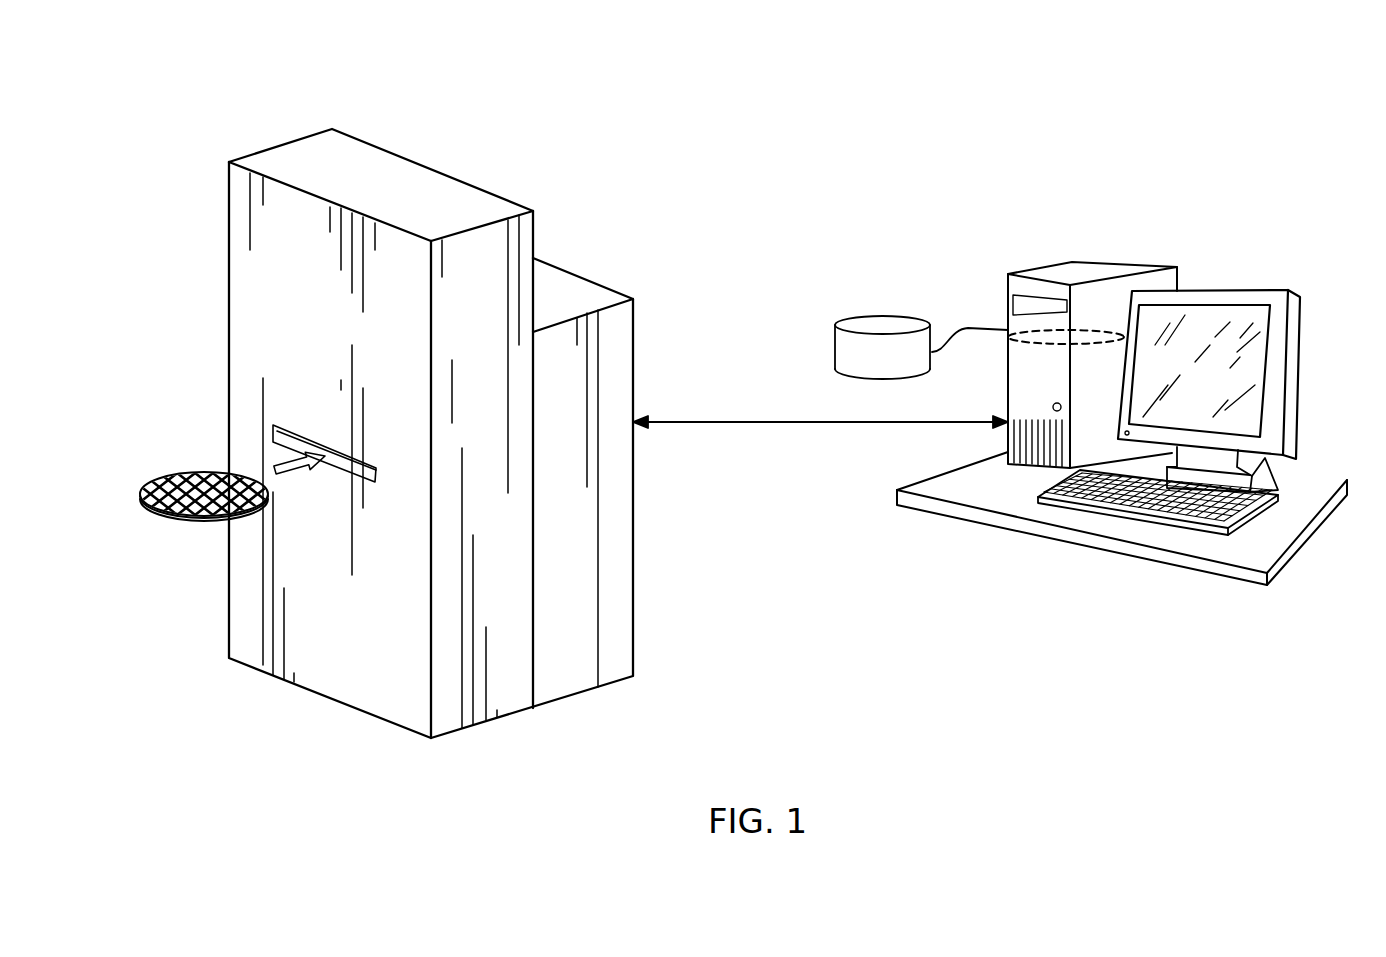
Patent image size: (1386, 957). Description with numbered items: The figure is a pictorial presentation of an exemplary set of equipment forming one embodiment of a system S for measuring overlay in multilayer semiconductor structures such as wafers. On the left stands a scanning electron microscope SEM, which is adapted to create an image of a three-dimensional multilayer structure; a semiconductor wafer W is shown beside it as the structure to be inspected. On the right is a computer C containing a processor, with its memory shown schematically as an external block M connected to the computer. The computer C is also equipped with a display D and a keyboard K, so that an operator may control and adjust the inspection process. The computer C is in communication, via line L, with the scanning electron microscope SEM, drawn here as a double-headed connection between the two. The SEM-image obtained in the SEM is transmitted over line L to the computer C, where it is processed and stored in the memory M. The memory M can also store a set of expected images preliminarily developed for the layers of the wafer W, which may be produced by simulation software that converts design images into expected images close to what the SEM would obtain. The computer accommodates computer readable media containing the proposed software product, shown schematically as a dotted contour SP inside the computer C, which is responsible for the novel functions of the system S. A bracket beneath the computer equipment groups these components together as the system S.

The scanning electron microscope SEM is at (278, 143).
The semiconductor wafer W is at (163, 470).
The line L is at (805, 423).
The system S is at (1330, 597).
The memory M is at (887, 313).
The computer C is at (1058, 262).
The software product SP is at (1099, 324).
The display D is at (1218, 290).
The keyboard K is at (1273, 503).